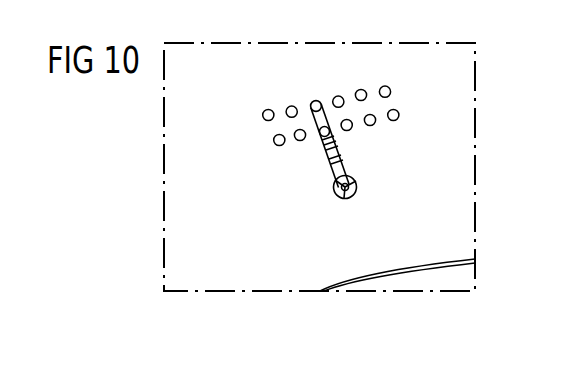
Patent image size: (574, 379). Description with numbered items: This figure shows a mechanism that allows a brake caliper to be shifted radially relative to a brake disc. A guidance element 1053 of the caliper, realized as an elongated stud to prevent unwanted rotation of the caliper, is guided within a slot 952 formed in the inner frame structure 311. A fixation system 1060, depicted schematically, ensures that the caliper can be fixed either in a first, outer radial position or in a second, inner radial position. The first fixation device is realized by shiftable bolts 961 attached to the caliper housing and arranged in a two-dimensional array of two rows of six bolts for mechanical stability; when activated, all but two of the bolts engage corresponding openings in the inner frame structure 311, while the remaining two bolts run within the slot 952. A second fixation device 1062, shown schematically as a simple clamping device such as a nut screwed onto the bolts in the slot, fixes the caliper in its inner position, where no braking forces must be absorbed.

The inner frame structure 311 is at (223, 86).
The shiftable bolts 961 is at (393, 79).
The guidance element 1053 is at (337, 145).
The slot 952 is at (331, 179).
The second fixation means or device 1062 is at (357, 187).
The fixation system 1060 is at (293, 153).